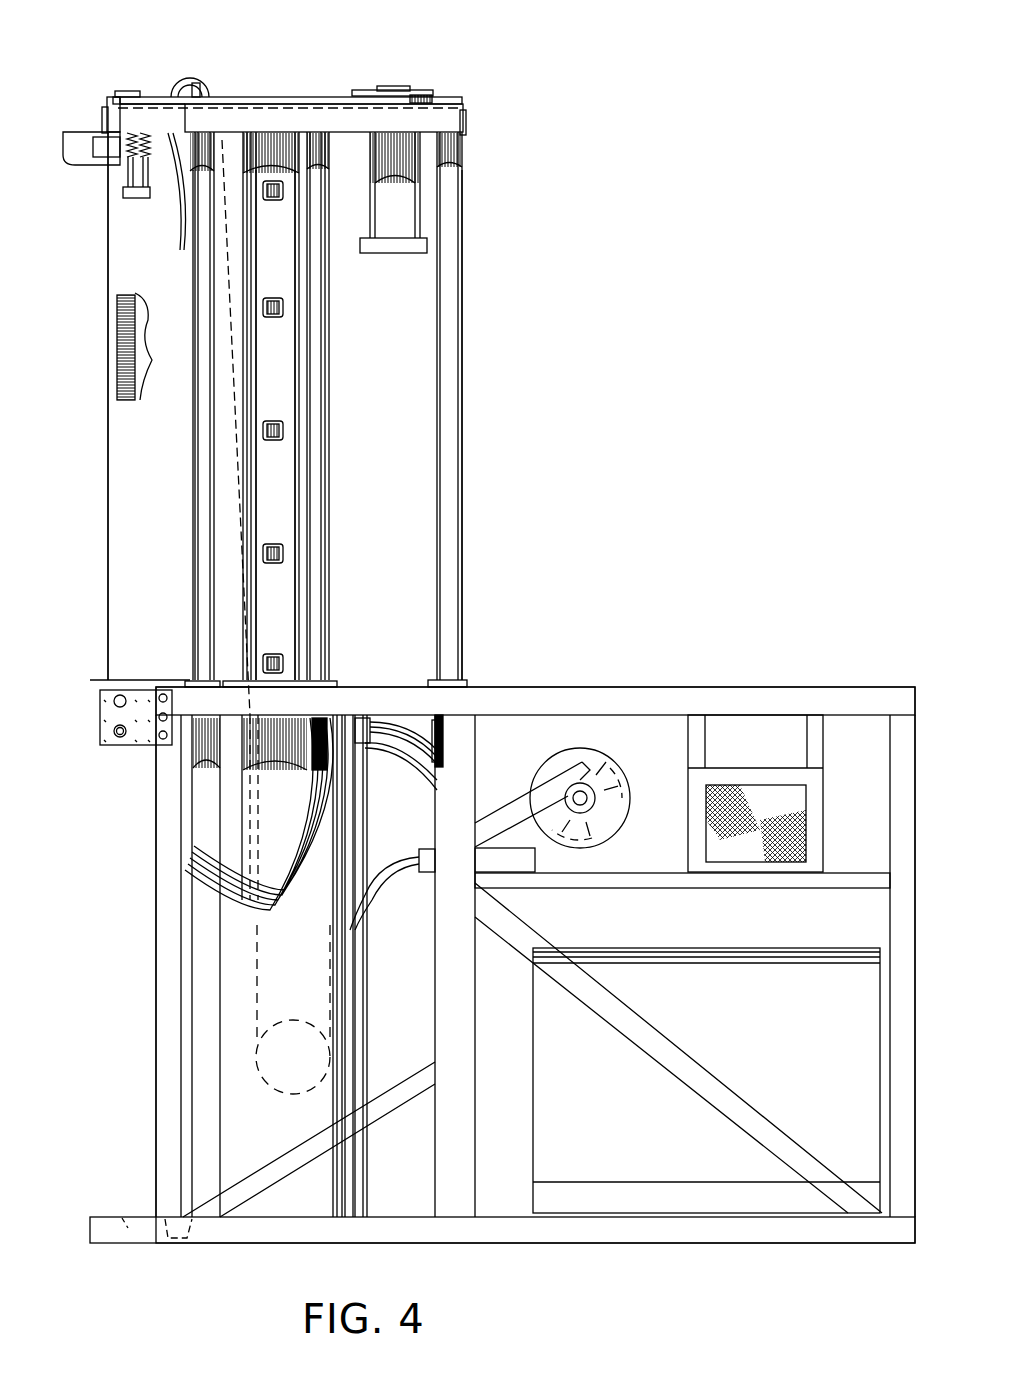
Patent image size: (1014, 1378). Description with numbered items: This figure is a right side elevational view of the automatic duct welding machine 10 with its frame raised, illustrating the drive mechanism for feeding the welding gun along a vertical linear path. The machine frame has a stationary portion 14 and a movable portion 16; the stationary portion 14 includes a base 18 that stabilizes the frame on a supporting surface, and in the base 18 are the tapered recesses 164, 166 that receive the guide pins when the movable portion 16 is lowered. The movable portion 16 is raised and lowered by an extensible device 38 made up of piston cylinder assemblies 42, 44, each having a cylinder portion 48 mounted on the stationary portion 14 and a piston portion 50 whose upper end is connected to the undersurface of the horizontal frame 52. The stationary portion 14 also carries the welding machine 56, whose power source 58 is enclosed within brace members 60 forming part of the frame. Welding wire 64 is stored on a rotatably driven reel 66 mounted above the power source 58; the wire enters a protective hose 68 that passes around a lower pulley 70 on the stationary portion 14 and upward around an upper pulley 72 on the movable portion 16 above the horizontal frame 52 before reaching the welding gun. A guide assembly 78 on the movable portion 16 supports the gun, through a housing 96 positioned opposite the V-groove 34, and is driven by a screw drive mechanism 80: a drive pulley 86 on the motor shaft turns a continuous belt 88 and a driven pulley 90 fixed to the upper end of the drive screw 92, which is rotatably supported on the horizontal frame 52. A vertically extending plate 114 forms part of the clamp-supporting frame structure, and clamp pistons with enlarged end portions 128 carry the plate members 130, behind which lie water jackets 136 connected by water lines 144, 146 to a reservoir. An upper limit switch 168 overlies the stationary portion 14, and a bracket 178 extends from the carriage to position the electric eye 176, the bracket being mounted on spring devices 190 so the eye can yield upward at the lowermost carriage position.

The automatic duct welding machine 10 is at (162, 45).
The stationary portion 14 is at (785, 660).
The movable portion 16 is at (475, 158).
The base 18 is at (90, 1222).
The V-groove 34 is at (420, 212).
The extensible device 38 is at (468, 475).
The piston cylinder assembly 42 is at (183, 682).
The piston cylinder assembly 44 is at (465, 686).
The cylinder portion 48 is at (195, 815).
The piston portion 50 is at (197, 400).
The horizontal frame 52 is at (467, 122).
The welding machine 56 is at (697, 940).
The power source 58 is at (816, 948).
The brace members 60 is at (685, 690).
The welding wire 64 is at (570, 850).
The reel 66 is at (625, 805).
The hose 68 is at (395, 885).
The lower pulley 70 is at (300, 1020).
The upper pulley 72 is at (210, 70).
The guide assembly 78 is at (100, 97).
The screw drive mechanism 80 is at (410, 77).
The drive pulley 86 is at (437, 90).
The continuous belt 88 is at (292, 97).
The driven pulley 90 is at (130, 90).
The drive screw 92 is at (118, 318).
The housing 96 is at (65, 140).
The plate 114 is at (108, 480).
The enlarged end portion 128 is at (283, 190).
The plate member 130 is at (287, 372).
The water jacket 136 is at (362, 838).
The water line 144 is at (404, 718).
The water line 146 is at (384, 745).
The tapered recess 164 is at (177, 1232).
The tapered recess 166 is at (130, 1220).
The upper limit switch 168 is at (182, 170).
The electric eye 176 is at (118, 190).
The bracket 178 is at (125, 162).
The spring devices 190 is at (148, 160).